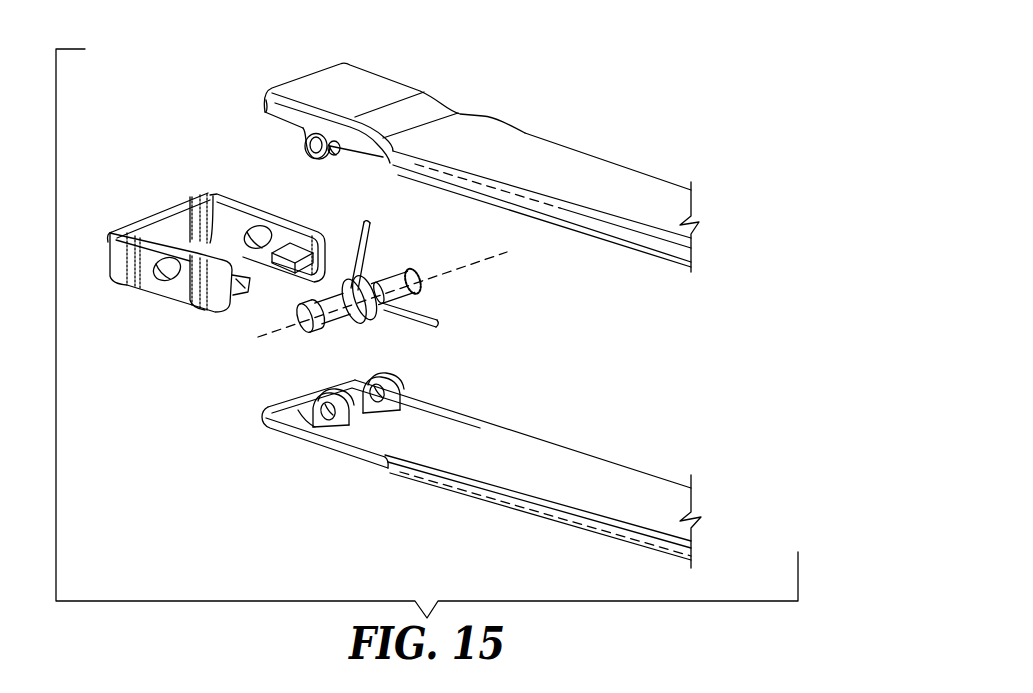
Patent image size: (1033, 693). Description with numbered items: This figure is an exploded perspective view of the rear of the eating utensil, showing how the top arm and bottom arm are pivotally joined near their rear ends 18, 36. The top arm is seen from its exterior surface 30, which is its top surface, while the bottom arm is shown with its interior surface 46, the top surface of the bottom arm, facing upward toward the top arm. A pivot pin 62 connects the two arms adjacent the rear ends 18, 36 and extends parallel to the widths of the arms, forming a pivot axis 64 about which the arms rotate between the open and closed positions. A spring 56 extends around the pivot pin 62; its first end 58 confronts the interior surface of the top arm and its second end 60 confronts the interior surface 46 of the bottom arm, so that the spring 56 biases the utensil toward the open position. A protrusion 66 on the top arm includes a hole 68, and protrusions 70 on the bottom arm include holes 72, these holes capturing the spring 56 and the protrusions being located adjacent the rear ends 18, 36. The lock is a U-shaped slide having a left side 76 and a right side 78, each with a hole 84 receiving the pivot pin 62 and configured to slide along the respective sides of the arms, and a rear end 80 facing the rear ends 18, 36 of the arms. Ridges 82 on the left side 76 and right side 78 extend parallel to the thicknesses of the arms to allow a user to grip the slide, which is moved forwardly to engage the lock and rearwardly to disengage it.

The rear end 18 is at (300, 82).
The exterior surface 30 is at (645, 180).
The rear end 36 is at (300, 400).
The interior surface 46 is at (626, 478).
The spring 56 is at (365, 325).
The first end 58 is at (374, 226).
The second end 60 is at (442, 324).
The pivot pin 62 is at (392, 272).
The pivot axis 64 is at (282, 328).
The protrusion 66 is at (328, 153).
The hole 68 is at (312, 144).
The protrusion 70 is at (396, 392).
The hole 72 is at (398, 400).
The left side 76 is at (233, 218).
The right side 78 is at (176, 300).
The rear end 80 is at (150, 214).
The ridge 82 is at (240, 200).
The hole 84 is at (152, 274).